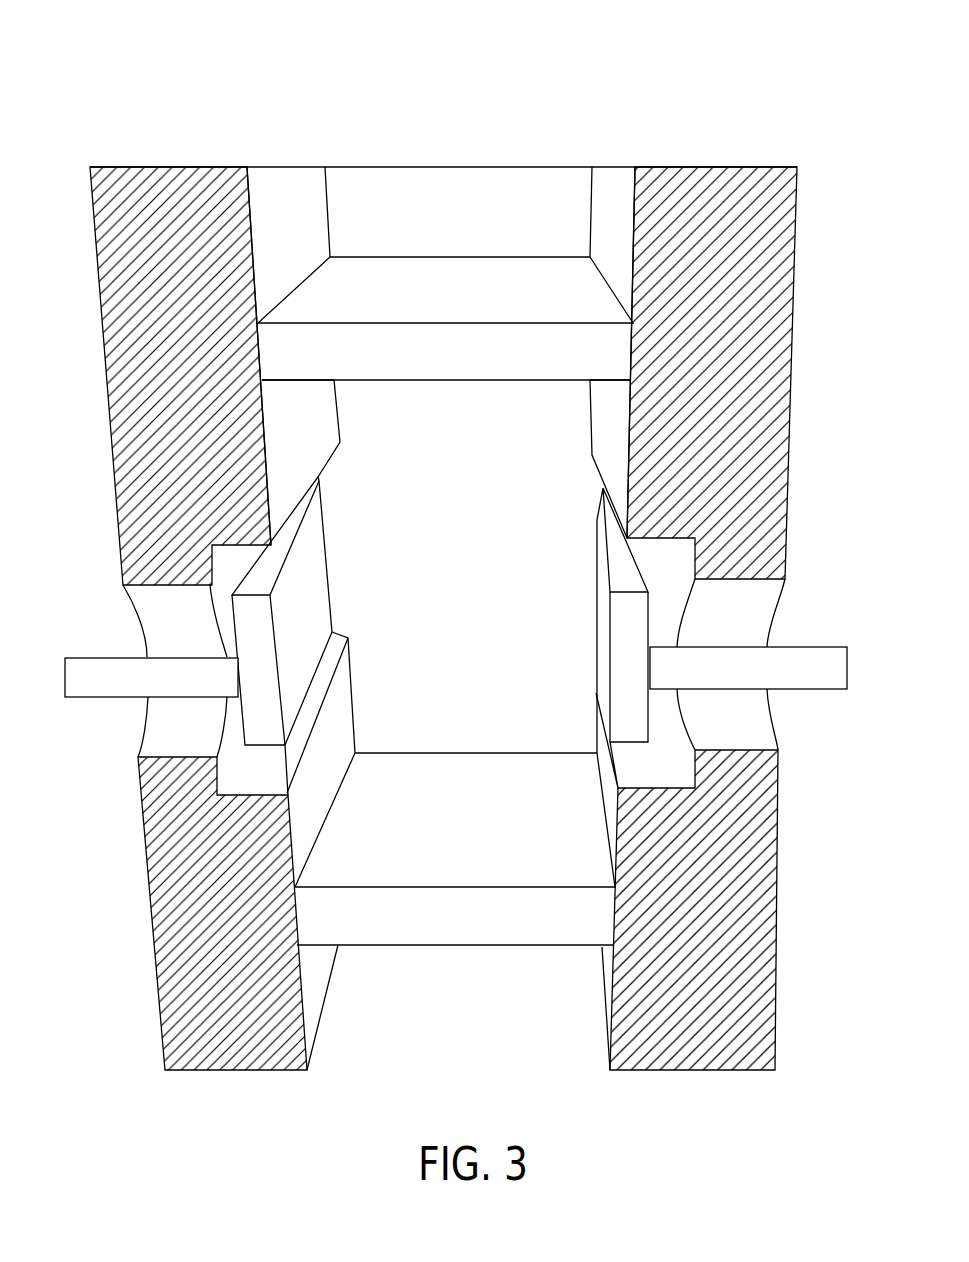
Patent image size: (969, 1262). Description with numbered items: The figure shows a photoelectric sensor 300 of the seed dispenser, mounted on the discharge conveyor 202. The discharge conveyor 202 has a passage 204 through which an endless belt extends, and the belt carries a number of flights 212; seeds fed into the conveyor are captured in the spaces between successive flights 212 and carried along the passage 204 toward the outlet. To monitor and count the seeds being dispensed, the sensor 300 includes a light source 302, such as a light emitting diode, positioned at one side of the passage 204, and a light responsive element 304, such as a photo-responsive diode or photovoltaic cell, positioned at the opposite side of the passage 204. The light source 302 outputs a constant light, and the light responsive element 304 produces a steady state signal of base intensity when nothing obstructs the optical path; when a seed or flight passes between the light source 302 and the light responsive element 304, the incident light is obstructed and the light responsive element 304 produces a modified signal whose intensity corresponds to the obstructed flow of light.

The photoelectric sensor 300 is at (786, 75).
The discharge conveyor 202 is at (118, 367).
The passage 204 is at (292, 175).
The flights 212 is at (424, 268).
The light source 302 is at (310, 506).
The light responsive element 304 is at (608, 522).